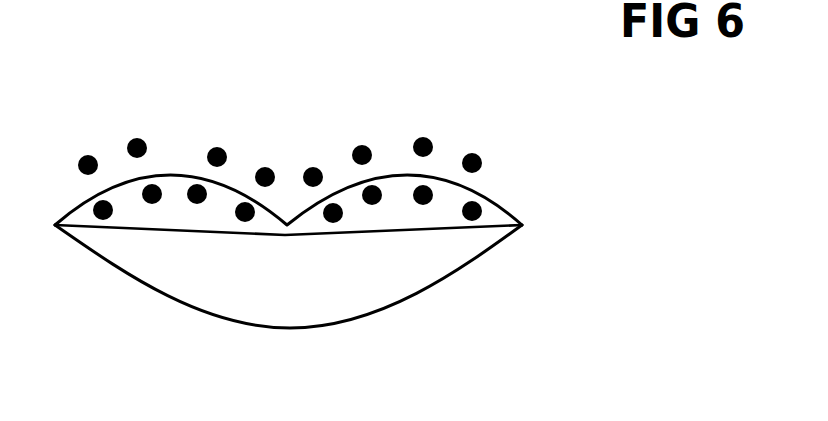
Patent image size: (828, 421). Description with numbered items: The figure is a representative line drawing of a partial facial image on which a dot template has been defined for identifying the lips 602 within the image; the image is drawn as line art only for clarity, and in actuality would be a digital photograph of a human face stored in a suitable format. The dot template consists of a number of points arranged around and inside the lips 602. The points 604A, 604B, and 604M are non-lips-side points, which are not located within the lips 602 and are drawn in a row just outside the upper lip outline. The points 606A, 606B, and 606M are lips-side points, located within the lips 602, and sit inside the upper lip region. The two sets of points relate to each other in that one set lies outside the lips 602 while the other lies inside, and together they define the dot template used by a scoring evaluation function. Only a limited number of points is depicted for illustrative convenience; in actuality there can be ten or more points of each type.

The lips 602 is at (288, 308).
The non-lips-side point 604A is at (78, 165).
The non-lips-side point 604B is at (181, 95).
The non-lips-side point 604M is at (520, 116).
The lips-side point 606A is at (103, 220).
The lips-side point 606B is at (152, 204).
The lips-side point 606M is at (472, 221).